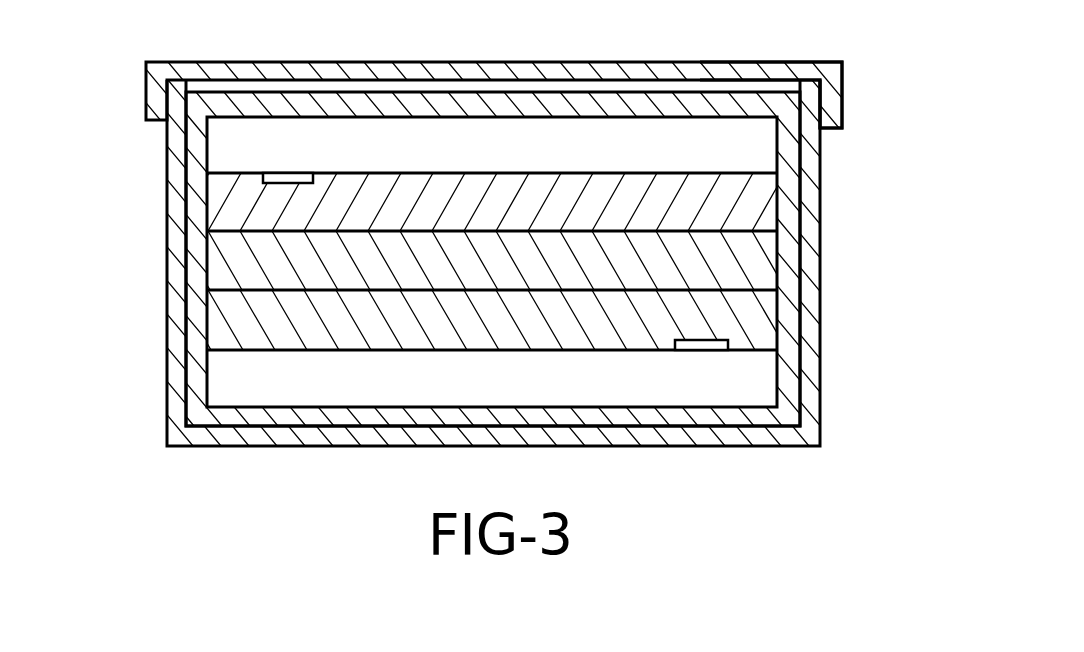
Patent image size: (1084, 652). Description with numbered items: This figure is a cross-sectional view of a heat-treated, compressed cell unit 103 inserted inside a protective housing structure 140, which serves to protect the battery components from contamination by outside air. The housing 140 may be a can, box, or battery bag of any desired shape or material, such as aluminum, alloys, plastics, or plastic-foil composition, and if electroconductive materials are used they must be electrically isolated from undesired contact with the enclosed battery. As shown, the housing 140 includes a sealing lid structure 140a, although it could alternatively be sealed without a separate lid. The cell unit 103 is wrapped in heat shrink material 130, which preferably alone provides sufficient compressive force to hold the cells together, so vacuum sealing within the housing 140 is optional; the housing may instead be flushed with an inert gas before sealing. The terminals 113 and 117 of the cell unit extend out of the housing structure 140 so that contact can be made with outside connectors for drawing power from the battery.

The cell unit 103 is at (680, 93).
The terminal 113 is at (285, 176).
The terminal 117 is at (702, 348).
The heat shrink material 130 is at (175, 232).
The protective housing structure 140 is at (822, 232).
The sealing lid structure 140a is at (757, 63).